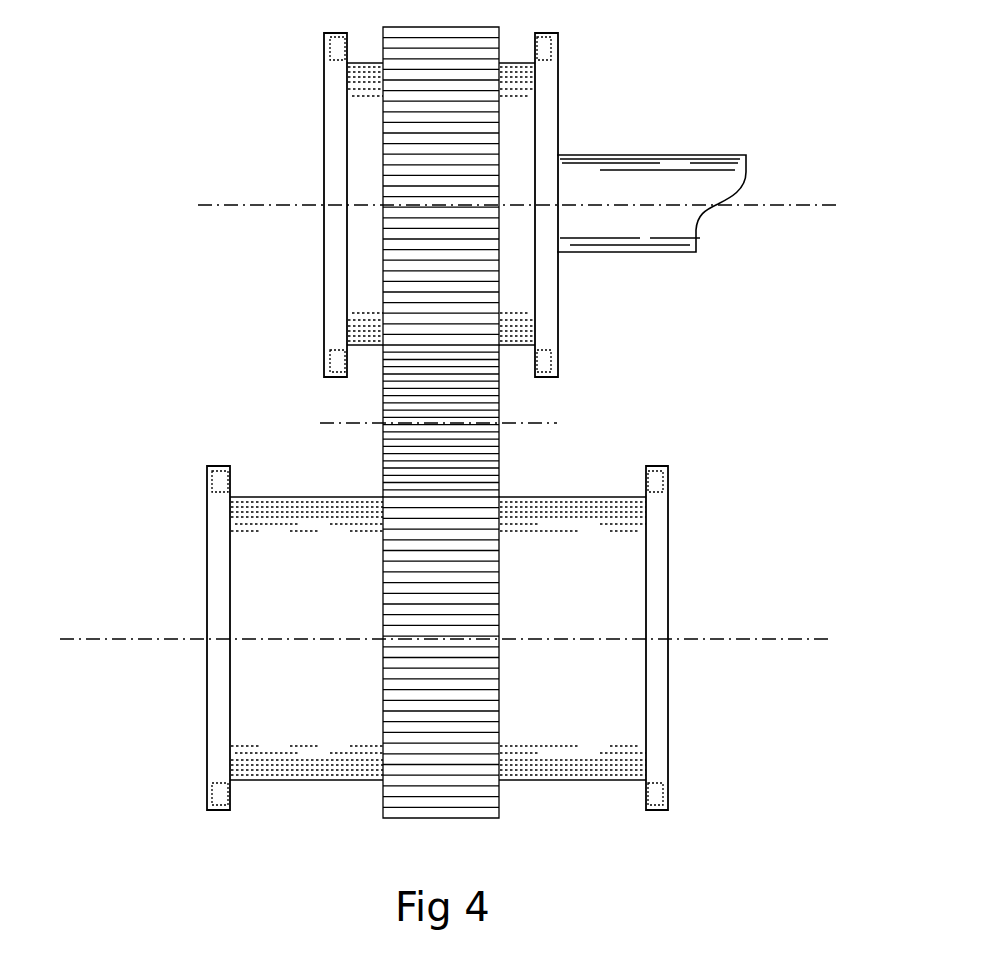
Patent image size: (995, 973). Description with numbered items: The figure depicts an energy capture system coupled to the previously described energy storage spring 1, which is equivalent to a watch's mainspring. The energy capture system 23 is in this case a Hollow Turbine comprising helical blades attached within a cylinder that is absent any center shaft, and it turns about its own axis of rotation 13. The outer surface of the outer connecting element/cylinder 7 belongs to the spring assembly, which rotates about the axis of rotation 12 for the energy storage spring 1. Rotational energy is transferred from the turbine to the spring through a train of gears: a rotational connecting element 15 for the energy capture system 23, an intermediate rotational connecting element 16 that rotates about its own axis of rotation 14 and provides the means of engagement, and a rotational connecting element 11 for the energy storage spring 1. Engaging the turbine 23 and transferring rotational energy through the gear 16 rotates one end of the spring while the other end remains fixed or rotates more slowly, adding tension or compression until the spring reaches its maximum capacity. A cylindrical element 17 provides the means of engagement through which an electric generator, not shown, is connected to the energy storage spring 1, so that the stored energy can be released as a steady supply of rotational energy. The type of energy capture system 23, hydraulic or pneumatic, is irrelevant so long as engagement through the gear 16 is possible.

The energy storage spring 1 is at (283, 95).
The outer surface of outer connecting element/cylinder 7 is at (374, 288).
The rotational connecting element for energy storage spring 11 is at (457, 222).
The axis of rotation for energy storage spring 12 is at (217, 208).
The axis of rotation for energy capture system 13 is at (97, 642).
The axis of rotation of rotational energy connecting element 14 is at (318, 423).
The rotational connecting element for energy capture system 15 is at (461, 654).
The rotational connecting element 16 is at (458, 442).
The cylindrical element 17 is at (649, 221).
The energy capture system 23 is at (328, 709).